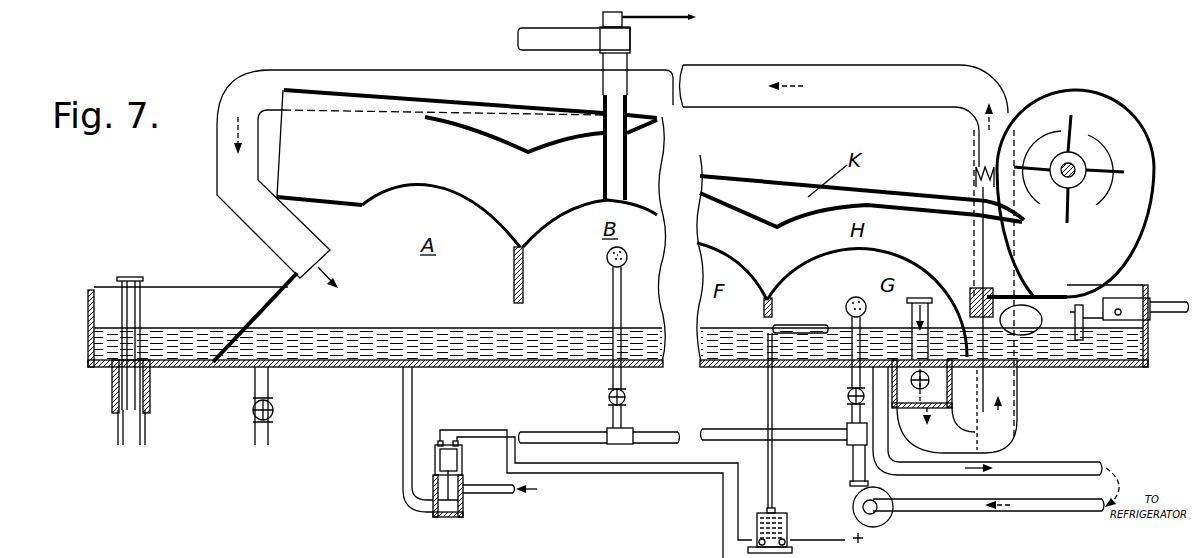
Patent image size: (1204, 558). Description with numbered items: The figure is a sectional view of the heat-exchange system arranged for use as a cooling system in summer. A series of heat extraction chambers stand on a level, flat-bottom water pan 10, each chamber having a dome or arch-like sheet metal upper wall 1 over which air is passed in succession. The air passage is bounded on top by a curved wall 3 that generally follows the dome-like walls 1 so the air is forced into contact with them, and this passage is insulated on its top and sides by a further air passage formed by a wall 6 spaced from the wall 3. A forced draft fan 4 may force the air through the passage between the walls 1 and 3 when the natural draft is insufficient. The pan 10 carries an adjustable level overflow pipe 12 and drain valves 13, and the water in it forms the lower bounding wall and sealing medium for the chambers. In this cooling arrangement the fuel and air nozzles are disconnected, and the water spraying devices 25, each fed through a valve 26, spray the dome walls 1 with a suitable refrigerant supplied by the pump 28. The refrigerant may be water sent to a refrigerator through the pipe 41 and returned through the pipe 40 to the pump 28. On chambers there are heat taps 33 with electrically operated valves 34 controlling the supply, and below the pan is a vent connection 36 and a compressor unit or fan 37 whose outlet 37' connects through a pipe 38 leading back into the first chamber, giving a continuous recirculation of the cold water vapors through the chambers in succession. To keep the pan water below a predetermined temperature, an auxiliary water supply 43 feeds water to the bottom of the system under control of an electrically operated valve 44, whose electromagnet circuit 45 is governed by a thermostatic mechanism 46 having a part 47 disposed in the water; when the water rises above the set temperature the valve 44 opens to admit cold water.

The dome-like upper wall 1 is at (487, 208).
The wall 3 is at (470, 118).
The forced draft fan 4 is at (1097, 124).
The wall 6 is at (400, 97).
The bottom water pan 10 is at (490, 365).
The adjustable level overflow pipe 12 is at (140, 293).
The drain valve 13 is at (253, 413).
The water spraying device 25 is at (606, 255).
The valve 26 is at (627, 397).
The pump 28 is at (880, 523).
The heat tap 33 is at (603, 165).
The electrically operated valve 34 is at (622, 43).
The vent connection 36 is at (932, 305).
The compressor unit 37 is at (970, 392).
The outlet 37' is at (975, 406).
The pipe 38 is at (910, 70).
The pipe 40 is at (1073, 509).
The pipe 41 is at (1088, 463).
The auxiliary water supply 43 is at (402, 368).
The electrically operated valve 44 is at (433, 491).
The circuit 45 is at (655, 470).
The thermostatic mechanism 46 is at (780, 515).
The part 47 is at (790, 325).